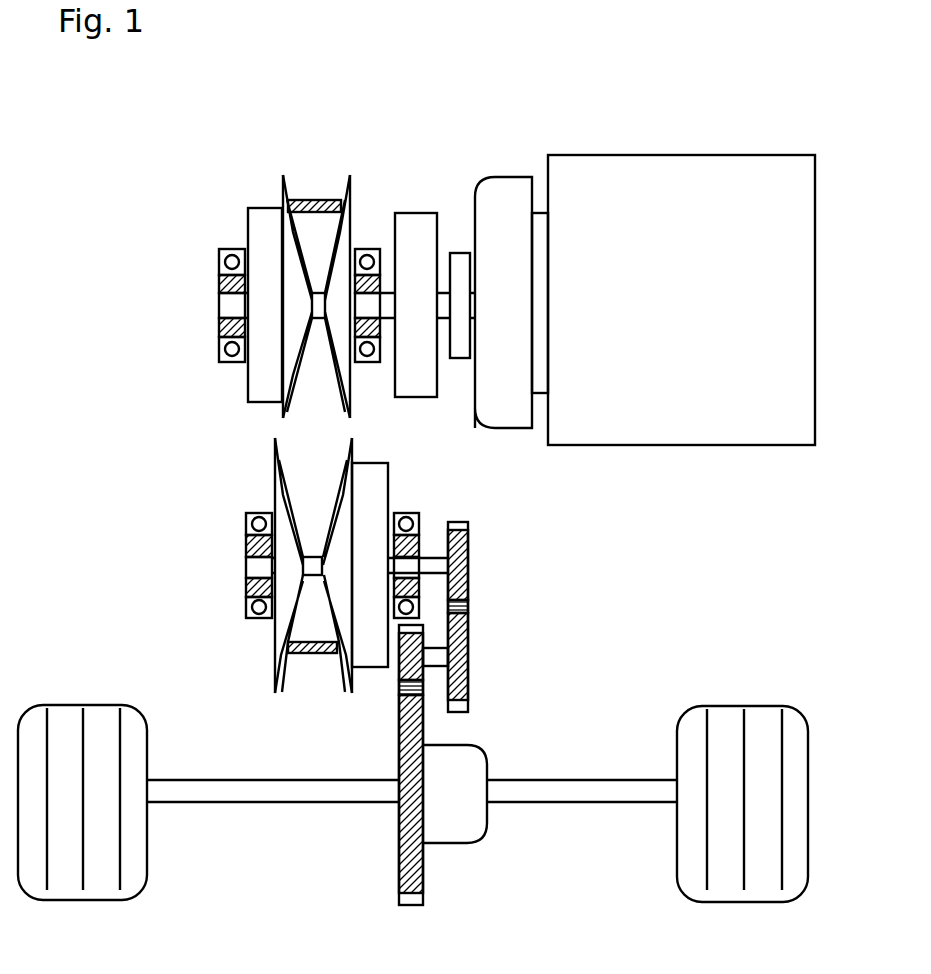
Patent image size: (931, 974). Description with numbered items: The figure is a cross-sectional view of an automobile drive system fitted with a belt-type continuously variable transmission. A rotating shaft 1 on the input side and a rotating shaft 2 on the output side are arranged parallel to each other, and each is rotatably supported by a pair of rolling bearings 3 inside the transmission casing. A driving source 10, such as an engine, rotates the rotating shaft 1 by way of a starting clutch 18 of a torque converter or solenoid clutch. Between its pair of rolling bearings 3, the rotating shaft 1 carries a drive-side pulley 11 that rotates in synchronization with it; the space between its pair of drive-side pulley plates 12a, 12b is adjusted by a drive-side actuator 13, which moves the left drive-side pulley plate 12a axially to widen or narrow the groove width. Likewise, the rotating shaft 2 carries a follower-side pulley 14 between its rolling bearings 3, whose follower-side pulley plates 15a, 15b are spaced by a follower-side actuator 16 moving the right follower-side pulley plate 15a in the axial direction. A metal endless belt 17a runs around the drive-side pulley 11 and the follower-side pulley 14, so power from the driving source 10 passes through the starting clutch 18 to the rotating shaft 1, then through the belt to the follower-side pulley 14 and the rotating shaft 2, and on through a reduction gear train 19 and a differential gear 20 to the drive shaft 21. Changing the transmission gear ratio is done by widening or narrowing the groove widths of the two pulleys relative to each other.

The rotating shaft on the input side 1 is at (235, 306).
The rotating shaft on the output side 2 is at (258, 567).
The rolling bearing 3 is at (231, 250).
The driving source 10 is at (741, 265).
The drive-side pulley 11 is at (264, 245).
The drive-side pulley plate 12a is at (283, 213).
The drive-side pulley plate 12b is at (352, 200).
The drive-side actuator 13 is at (272, 283).
The follower-side pulley 14 is at (271, 568).
The follower-side pulley plate 15a is at (345, 635).
The follower-side pulley plate 15b is at (285, 623).
The follower-side actuator 16 is at (377, 477).
The belt 17a is at (297, 657).
The starting clutch 18 is at (425, 215).
The reduction gear train 19 is at (460, 652).
The differential gear 20 is at (420, 718).
The drive shaft 21 is at (72, 866).